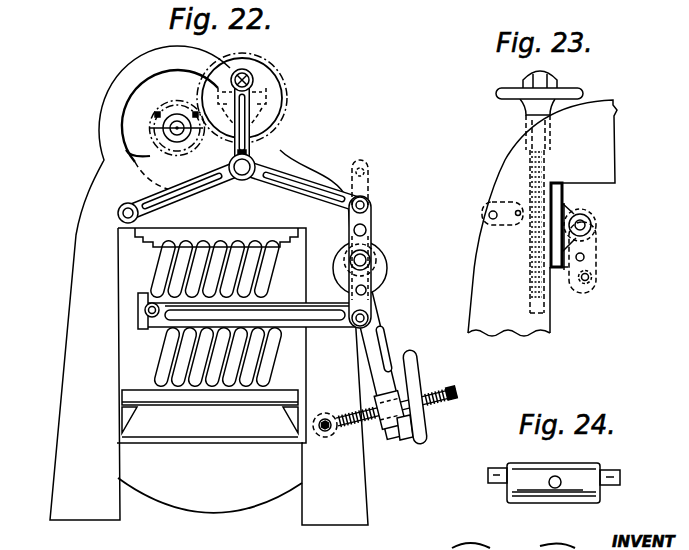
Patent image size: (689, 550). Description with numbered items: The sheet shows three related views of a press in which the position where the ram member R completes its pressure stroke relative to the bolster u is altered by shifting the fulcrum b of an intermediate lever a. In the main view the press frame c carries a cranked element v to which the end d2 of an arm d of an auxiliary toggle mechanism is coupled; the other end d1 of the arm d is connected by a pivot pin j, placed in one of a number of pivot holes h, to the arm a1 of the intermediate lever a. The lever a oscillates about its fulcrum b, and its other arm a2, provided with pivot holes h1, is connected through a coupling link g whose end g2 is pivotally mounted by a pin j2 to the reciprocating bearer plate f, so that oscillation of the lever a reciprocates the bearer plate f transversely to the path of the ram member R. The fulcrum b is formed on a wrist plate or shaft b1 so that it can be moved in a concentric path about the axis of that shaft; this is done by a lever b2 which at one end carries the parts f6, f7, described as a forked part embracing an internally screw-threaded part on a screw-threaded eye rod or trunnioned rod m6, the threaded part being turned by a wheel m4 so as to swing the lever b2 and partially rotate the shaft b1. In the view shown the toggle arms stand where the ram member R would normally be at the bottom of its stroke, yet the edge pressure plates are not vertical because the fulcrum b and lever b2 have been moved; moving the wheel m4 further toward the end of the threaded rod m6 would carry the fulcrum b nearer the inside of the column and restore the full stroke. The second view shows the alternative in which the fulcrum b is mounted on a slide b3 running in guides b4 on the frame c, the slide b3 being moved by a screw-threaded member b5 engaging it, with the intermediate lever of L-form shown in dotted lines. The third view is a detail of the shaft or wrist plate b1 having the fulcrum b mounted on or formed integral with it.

In FIG. 22, the frame c is at (83, 437).
In FIG. 23, the frame c is at (507, 313).
In FIG. 22, the bolster u is at (195, 463).
In FIG. 22, the cranked element v is at (250, 74).
In FIG. 22, the arm of auxiliary toggle-mechanism d is at (272, 172).
In FIG. 22, the end of arm d1 is at (368, 201).
In FIG. 22, the other end of arm d2 is at (239, 146).
In FIG. 22, the reciprocating bearer plate f is at (258, 292).
In FIG. 22, the clamp piece f6 is at (405, 420).
In FIG. 22, the clamping block f7 is at (395, 420).
In FIG. 22, the coupling link g is at (202, 316).
In FIG. 22, the end of coupling link g2 is at (146, 313).
In FIG. 22, the pivot pin j is at (369, 208).
In FIG. 22, the pin j2 is at (145, 307).
In FIG. 22, the pivot-holes h is at (363, 170).
In FIG. 23, the pivot-holes h is at (493, 215).
In FIG. 23, the pivot-holes h1 is at (584, 257).
In FIG. 22, the intermediate lever a is at (371, 287).
In FIG. 23, the intermediate lever a is at (587, 248).
In FIG. 22, the arm of intermediate lever a1 is at (366, 220).
In FIG. 23, the arm of intermediate lever a1 is at (500, 207).
In FIG. 22, the arm of intermediate lever a2 is at (369, 295).
In FIG. 23, the arm of intermediate lever a2 is at (590, 280).
In FIG. 22, the fulcrum b is at (372, 247).
In FIG. 23, the fulcrum b is at (563, 252).
In FIG. 24, the fulcrum b is at (490, 478).
In FIG. 22, the wrist plate or shaft b1 is at (368, 268).
In FIG. 24, the wrist plate or shaft b1 is at (537, 477).
In FIG. 22, the lever b2 is at (381, 338).
In FIG. 23, the slide b3 is at (564, 268).
In FIG. 23, the guides b4 is at (557, 200).
In FIG. 23, the screw threaded member b5 is at (532, 167).
In FIG. 22, the wheel m4 is at (430, 437).
In FIG. 23, the wheel m4 is at (563, 90).
In FIG. 22, the screw threaded eye rod m6 is at (455, 400).
In FIG. 22, the ram member R is at (153, 395).